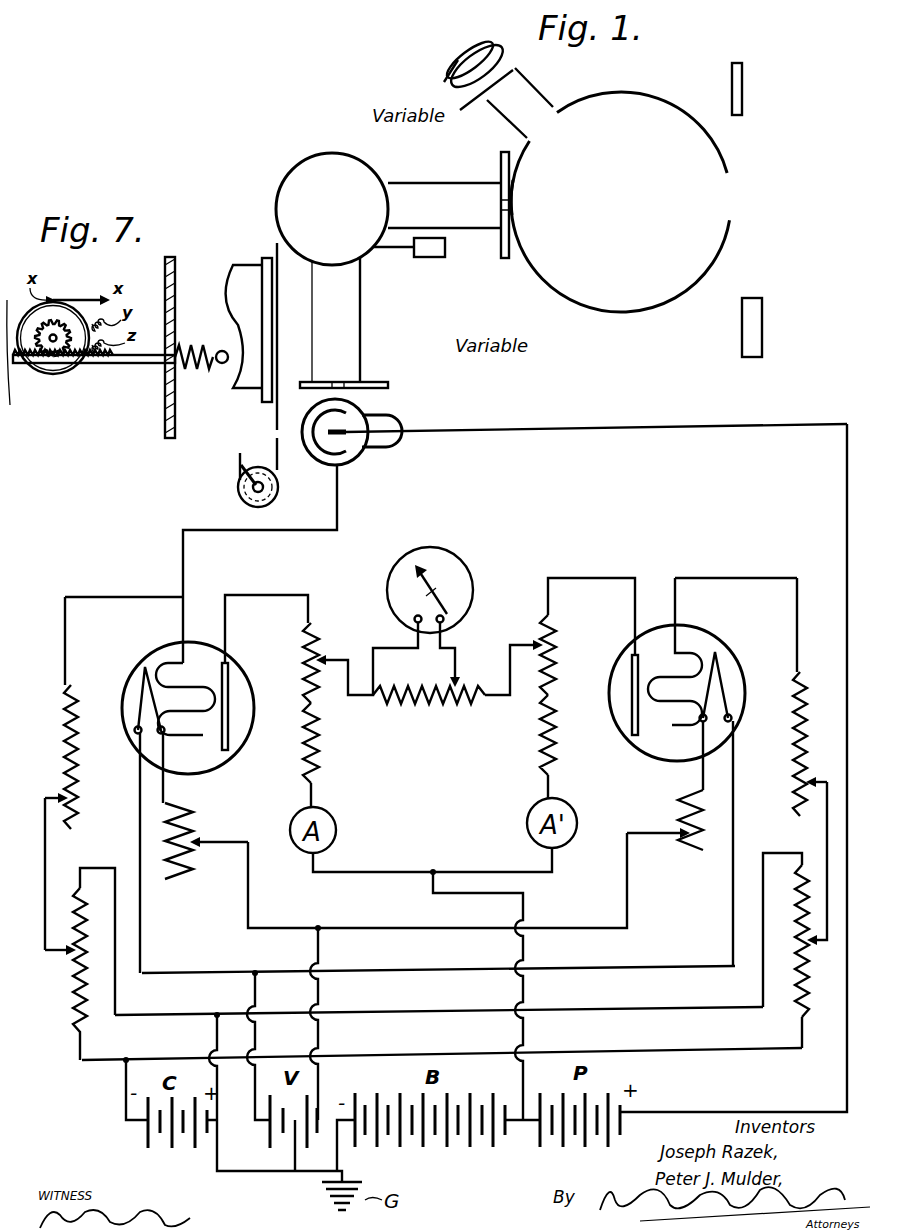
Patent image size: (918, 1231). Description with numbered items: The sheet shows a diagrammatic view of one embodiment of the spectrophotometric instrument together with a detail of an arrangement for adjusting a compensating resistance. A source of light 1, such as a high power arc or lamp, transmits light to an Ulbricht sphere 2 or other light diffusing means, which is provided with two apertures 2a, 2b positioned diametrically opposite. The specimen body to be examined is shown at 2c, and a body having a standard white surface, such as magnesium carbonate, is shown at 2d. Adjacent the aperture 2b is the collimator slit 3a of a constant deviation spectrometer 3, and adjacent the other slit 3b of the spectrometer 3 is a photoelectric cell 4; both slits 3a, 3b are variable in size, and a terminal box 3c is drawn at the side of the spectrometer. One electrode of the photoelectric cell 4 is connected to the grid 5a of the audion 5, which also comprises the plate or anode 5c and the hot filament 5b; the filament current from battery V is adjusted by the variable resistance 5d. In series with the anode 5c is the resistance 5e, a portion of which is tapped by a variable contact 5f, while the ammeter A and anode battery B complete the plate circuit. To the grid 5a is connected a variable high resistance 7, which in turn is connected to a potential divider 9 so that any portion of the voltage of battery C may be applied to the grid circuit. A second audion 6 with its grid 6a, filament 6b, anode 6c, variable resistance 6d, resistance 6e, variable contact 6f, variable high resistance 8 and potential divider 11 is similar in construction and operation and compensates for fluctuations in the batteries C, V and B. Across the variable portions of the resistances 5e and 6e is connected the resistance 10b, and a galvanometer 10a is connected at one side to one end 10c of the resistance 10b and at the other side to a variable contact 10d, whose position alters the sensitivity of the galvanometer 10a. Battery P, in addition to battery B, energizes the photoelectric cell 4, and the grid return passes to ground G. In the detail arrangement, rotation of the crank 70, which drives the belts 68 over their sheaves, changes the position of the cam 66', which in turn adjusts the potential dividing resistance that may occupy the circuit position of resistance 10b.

In FIG. 1, the source of light 1 is at (460, 60).
In FIG. 1, the Ulbricht sphere 2 is at (648, 94).
In FIG. 1, the aperture 2a is at (731, 214).
In FIG. 1, the aperture 2b is at (518, 190).
In FIG. 1, the specimen body 2c is at (745, 97).
In FIG. 1, the standard white surface body 2d is at (765, 327).
In FIG. 1, the constant deviation spectrometer 3 is at (332, 152).
In FIG. 1, the collimator slit 3a is at (502, 204).
In FIG. 1, the slit 3b is at (342, 382).
In FIG. 1, the terminal box 3c is at (440, 258).
In FIG. 1, the photoelectric cell 4 is at (368, 411).
In FIG. 1, the audion 5 is at (156, 648).
In FIG. 1, the grid 5a is at (198, 738).
In FIG. 1, the hot filament 5b is at (138, 690).
In FIG. 1, the plate or anode 5c is at (232, 702).
In FIG. 1, the variable resistance 5d is at (200, 829).
In FIG. 1, the resistance 5e is at (302, 721).
In FIG. 1, the variable contact 5f is at (326, 655).
In FIG. 1, the audion 6 is at (622, 746).
In FIG. 1, the grid 6a is at (674, 728).
In FIG. 1, the hot filament 6b is at (730, 677).
In FIG. 1, the plate or anode 6c is at (630, 674).
In FIG. 1, the variable resistance 6d is at (685, 805).
In FIG. 1, the resistance 6e is at (540, 735).
In FIG. 1, the variable contact 6f is at (540, 641).
In FIG. 1, the variable high resistance 7 is at (57, 713).
In FIG. 1, the variable high resistance 8 is at (812, 738).
In FIG. 1, the potential divider 9 is at (70, 982).
In FIG. 1, the galvanometer 10a is at (469, 573).
In FIG. 1, the resistance 10b is at (412, 704).
In FIG. 1, the end of resistance 10c is at (365, 704).
In FIG. 1, the variable contact 10d is at (455, 660).
In FIG. 1, the potential divider 11 is at (810, 967).
In FIG. 7, the cam 66' is at (232, 330).
In FIG. 7, the belts 68 is at (276, 428).
In FIG. 7, the crank 70 is at (248, 474).